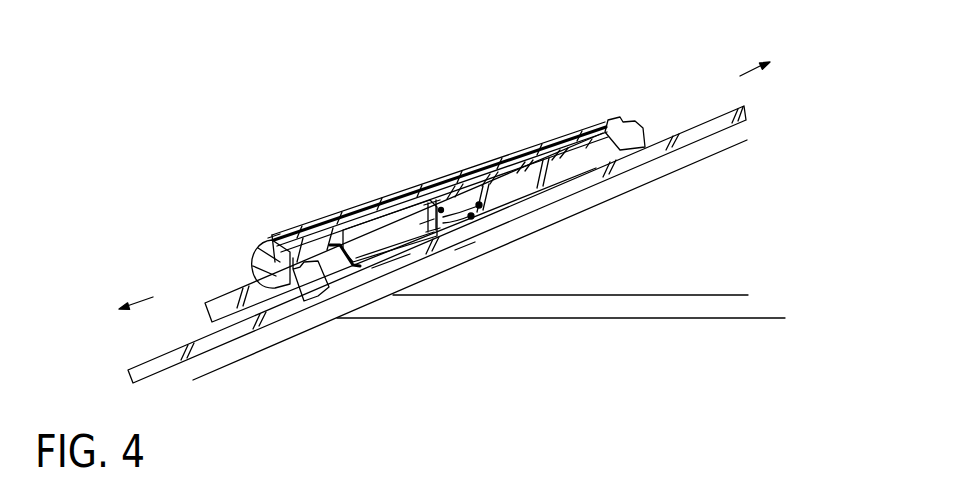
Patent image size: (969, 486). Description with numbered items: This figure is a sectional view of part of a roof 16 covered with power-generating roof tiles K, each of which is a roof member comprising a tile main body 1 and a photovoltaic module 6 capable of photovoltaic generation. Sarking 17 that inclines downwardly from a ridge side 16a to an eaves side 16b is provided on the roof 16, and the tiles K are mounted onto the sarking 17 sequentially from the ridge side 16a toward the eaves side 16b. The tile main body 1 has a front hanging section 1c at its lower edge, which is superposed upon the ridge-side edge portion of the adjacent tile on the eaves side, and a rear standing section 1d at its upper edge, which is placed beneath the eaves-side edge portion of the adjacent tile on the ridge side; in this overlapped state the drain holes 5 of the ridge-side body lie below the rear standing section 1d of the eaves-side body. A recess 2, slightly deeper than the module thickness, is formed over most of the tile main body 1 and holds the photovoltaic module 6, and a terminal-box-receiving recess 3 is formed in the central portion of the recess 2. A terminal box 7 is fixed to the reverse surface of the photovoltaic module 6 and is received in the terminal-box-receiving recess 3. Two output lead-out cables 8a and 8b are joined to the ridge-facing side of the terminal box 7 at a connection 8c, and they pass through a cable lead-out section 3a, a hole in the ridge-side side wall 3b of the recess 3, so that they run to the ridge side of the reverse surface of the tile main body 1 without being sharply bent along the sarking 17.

The tile main body 1 is at (563, 177).
The front hanging section 1c is at (252, 262).
The rear standing section 1d is at (615, 118).
The recess 2 is at (530, 150).
The terminal-box-receiving recess 3 is at (395, 258).
The cable lead-out section 3a is at (430, 203).
The ridge-side side wall 3b is at (465, 245).
The drain holes 5 is at (273, 240).
The photovoltaic module 6 is at (462, 180).
The terminal box 7 is at (385, 237).
The output lead-out cable 8a is at (440, 207).
The output lead-out cable 8b is at (467, 228).
The connection 8c is at (425, 222).
The roof 16 is at (702, 102).
The ridge side 16a is at (754, 77).
The eaves side 16b is at (153, 297).
The sarking 17 is at (695, 133).
The power-generating roof tile K is at (218, 292).